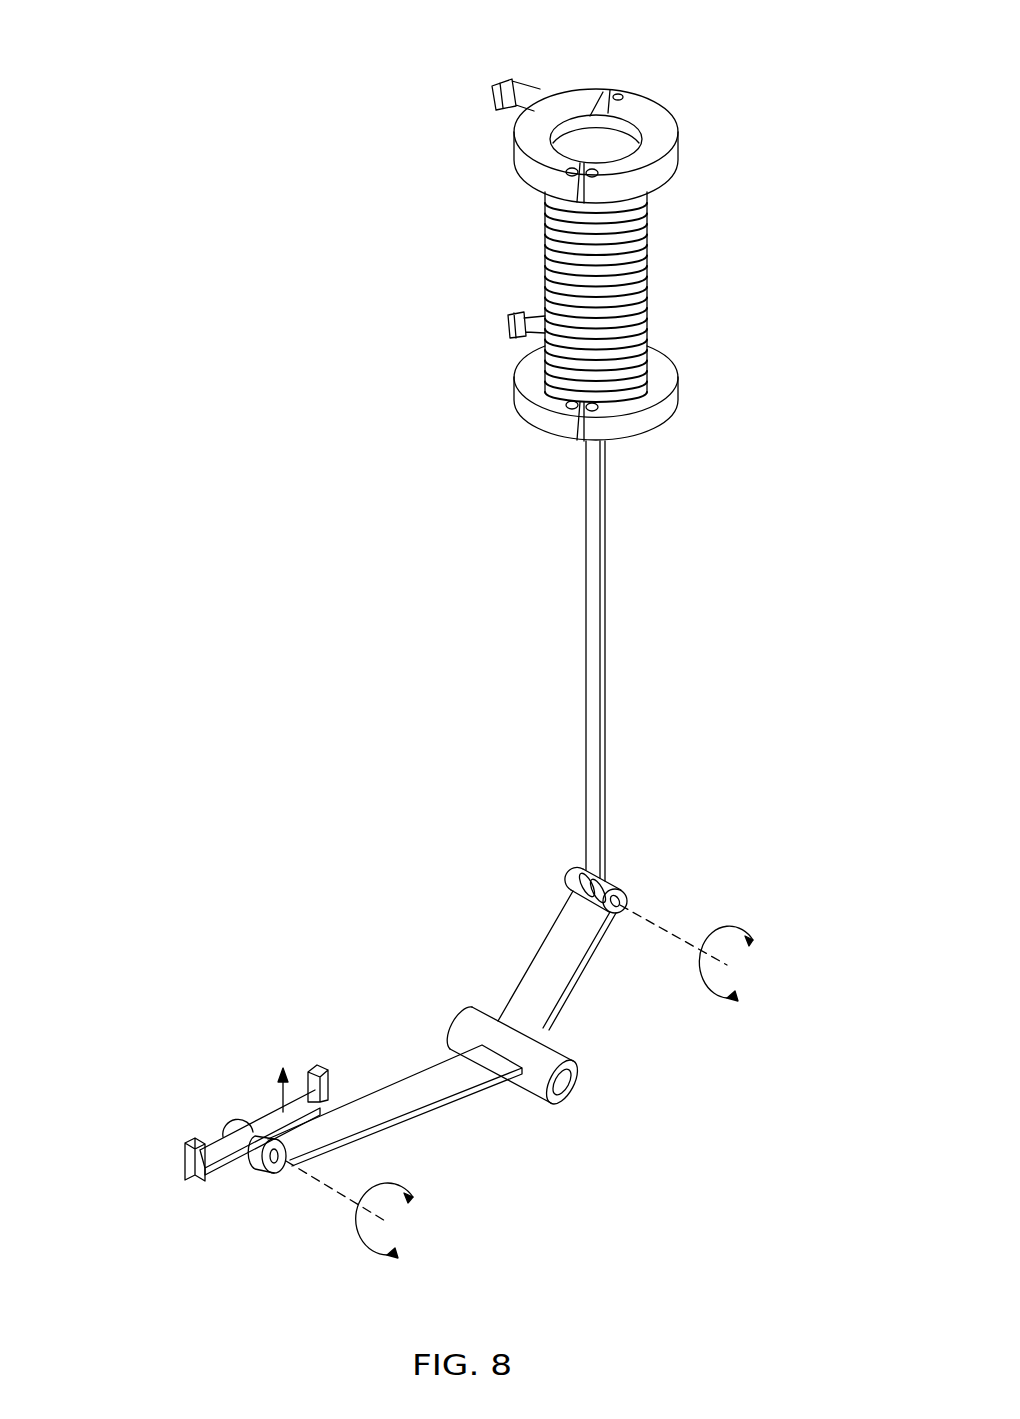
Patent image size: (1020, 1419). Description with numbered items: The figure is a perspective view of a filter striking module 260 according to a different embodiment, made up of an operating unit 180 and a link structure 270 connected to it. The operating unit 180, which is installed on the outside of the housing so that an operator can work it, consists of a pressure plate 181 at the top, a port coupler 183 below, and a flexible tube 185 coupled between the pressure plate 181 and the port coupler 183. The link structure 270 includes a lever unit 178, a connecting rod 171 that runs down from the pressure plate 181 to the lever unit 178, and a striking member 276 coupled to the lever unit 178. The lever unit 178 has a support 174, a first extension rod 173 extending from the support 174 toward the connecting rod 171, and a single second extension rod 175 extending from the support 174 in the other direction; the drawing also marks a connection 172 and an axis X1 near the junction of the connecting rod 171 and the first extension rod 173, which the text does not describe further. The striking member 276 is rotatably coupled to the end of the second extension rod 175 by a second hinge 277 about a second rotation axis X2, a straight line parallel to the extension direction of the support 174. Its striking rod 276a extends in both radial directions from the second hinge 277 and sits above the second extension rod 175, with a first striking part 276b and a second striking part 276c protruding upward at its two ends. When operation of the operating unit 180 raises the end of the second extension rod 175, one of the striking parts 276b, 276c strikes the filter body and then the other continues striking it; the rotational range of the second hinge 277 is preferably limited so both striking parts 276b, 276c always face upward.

The filter striking module 260 is at (377, 180).
The operating unit 180 is at (702, 236).
The pressure plate 181 is at (588, 132).
The flexible tube 185 is at (650, 280).
The port coupler 183 is at (660, 406).
The connecting rod 171 is at (606, 612).
The link structure 270 is at (455, 778).
The pivot pin 172 is at (625, 888).
The first rotation axis X1 is at (690, 940).
The first extension rod 173 is at (548, 942).
The support 174 is at (580, 1092).
The lever unit 178 is at (365, 925).
The second extension rod 175 is at (445, 1105).
The second hinge 277 is at (268, 1174).
The second rotation axis X2 is at (323, 1188).
The striking member 276 is at (216, 1148).
The striking rod 276a is at (264, 1118).
The first striking part 276b is at (185, 1165).
The second striking part 276c is at (325, 1068).